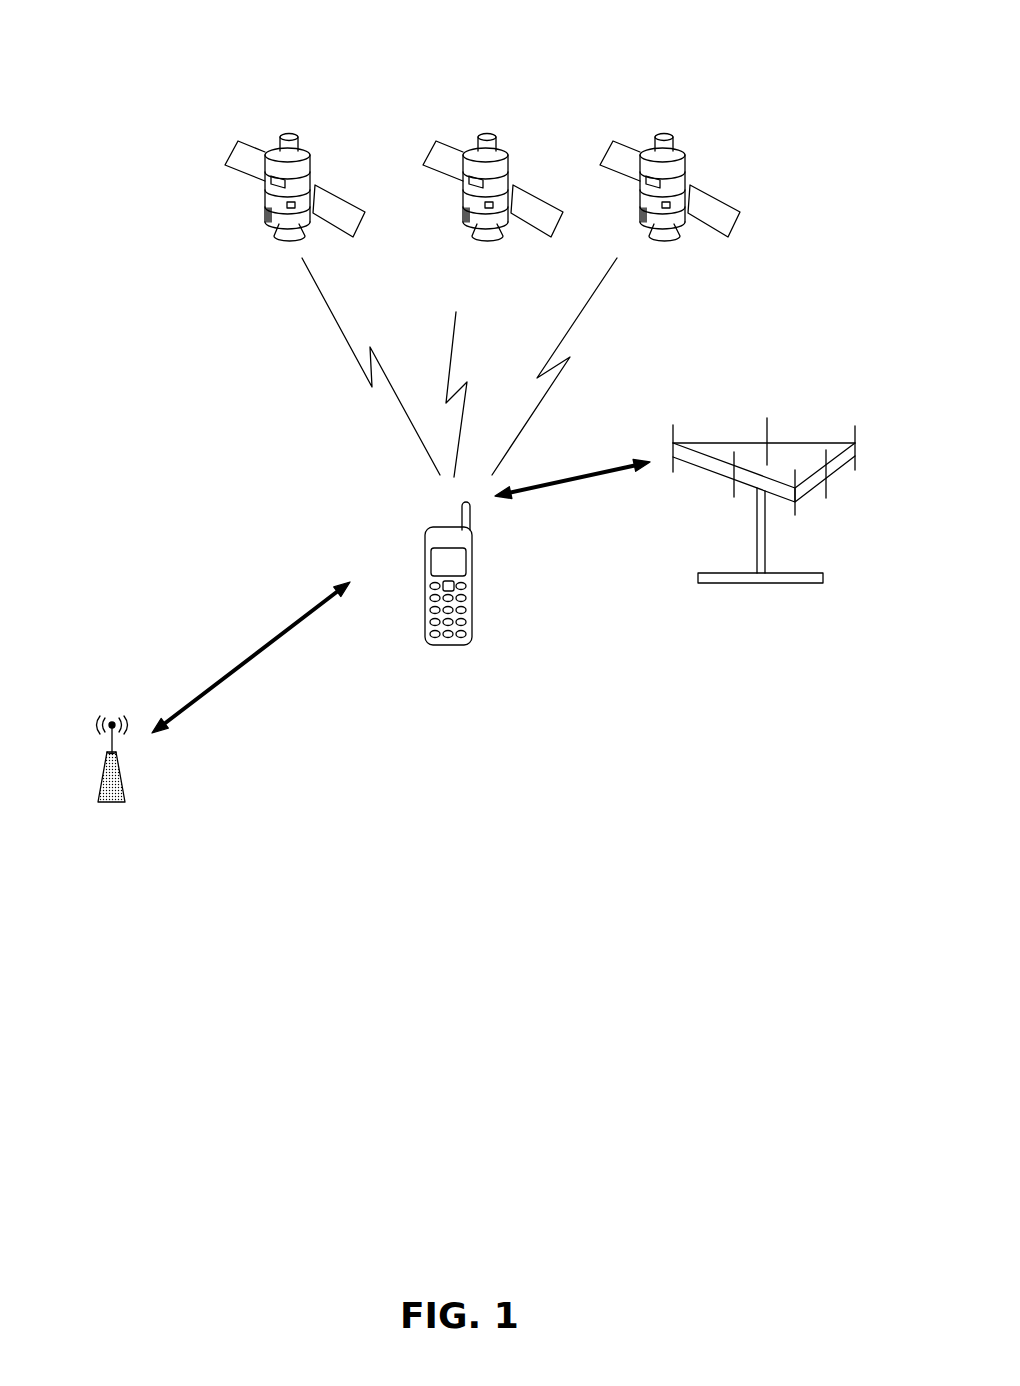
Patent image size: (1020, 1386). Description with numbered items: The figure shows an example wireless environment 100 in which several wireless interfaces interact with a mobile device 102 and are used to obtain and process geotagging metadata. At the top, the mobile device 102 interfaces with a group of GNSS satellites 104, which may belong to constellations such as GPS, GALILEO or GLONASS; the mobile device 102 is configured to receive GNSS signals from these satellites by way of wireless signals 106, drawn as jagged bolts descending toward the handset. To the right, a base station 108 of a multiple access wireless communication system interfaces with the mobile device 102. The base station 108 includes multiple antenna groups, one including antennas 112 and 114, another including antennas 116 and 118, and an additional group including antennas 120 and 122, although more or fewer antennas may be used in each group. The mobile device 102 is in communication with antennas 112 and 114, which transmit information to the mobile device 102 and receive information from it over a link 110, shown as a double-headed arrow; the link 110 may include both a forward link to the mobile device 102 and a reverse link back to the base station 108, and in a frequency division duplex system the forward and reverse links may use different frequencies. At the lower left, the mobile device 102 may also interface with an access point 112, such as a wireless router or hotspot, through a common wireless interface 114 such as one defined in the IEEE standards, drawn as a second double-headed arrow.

The wireless environment 100 is at (96, 44).
The mobile device 102 is at (414, 560).
The GNSS satellites 104 is at (200, 196).
The wireless signals 106 is at (457, 345).
The base station 108 is at (707, 586).
The link 110 is at (565, 480).
The antenna / access point 112 is at (124, 805).
The antenna / wireless interface 114 is at (253, 668).
The antenna 116 is at (857, 470).
The antenna 118 is at (734, 477).
The antenna 120 is at (673, 428).
The antenna 122 is at (767, 418).